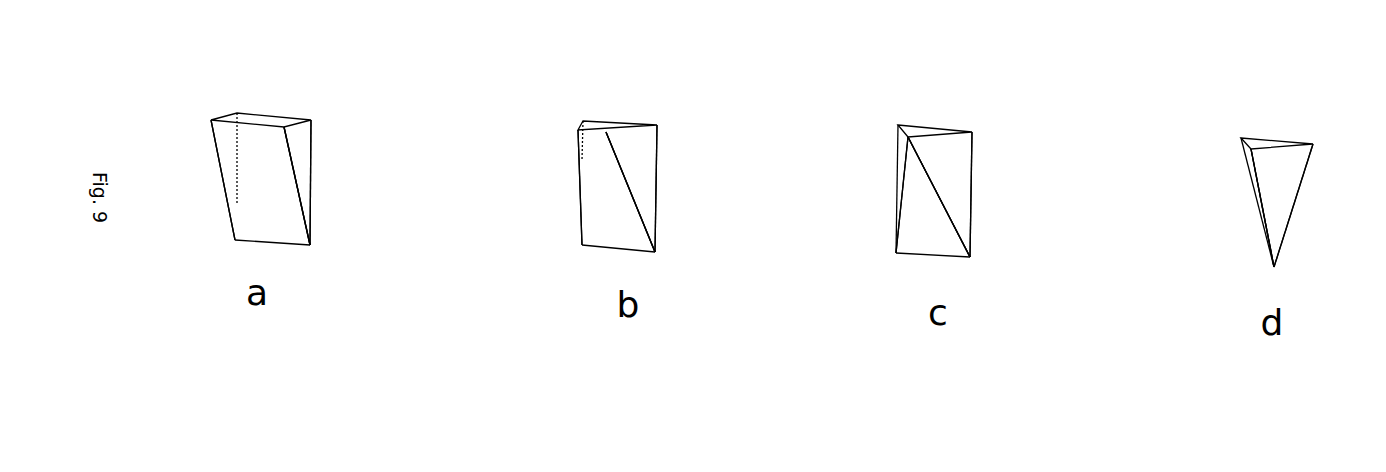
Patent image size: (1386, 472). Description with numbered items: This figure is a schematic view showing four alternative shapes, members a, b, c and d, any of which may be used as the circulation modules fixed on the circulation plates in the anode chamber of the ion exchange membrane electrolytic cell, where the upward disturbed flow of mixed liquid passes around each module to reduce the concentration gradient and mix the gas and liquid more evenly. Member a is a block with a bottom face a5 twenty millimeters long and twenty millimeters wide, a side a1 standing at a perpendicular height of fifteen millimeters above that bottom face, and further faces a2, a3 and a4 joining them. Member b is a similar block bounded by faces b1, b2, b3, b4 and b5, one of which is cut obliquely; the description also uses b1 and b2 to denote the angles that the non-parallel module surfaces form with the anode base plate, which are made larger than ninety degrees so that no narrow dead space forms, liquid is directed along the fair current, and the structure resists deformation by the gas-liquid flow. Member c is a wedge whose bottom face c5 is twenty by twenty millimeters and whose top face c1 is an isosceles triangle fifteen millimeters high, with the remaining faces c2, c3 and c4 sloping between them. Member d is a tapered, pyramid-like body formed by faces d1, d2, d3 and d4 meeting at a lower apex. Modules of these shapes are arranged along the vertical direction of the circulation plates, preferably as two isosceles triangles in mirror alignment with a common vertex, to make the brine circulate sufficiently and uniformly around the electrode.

The side a1 is at (277, 122).
The left side face of prism a a2 is at (237, 142).
The right side face of prism a a3 is at (300, 158).
The front face of prism a a4 is at (253, 187).
The bottom face a5 is at (297, 143).
The angle b1 is at (623, 128).
The angle b2 is at (578, 143).
The right side face of prism b b3 is at (647, 167).
The front face of prism b b4 is at (600, 193).
The inclined face of prism b b5 is at (623, 157).
The top face c1 is at (937, 132).
The left side face of prism c c2 is at (905, 150).
The right side face of prism c c3 is at (960, 172).
The front face of prism c c4 is at (913, 202).
The bottom face c5 is at (932, 163).
The top face of tetrahedron d d1 is at (1280, 142).
The left face of tetrahedron d d2 is at (1248, 160).
The right face of tetrahedron d d3 is at (1303, 183).
The inclined face of tetrahedron d d4 is at (1275, 175).